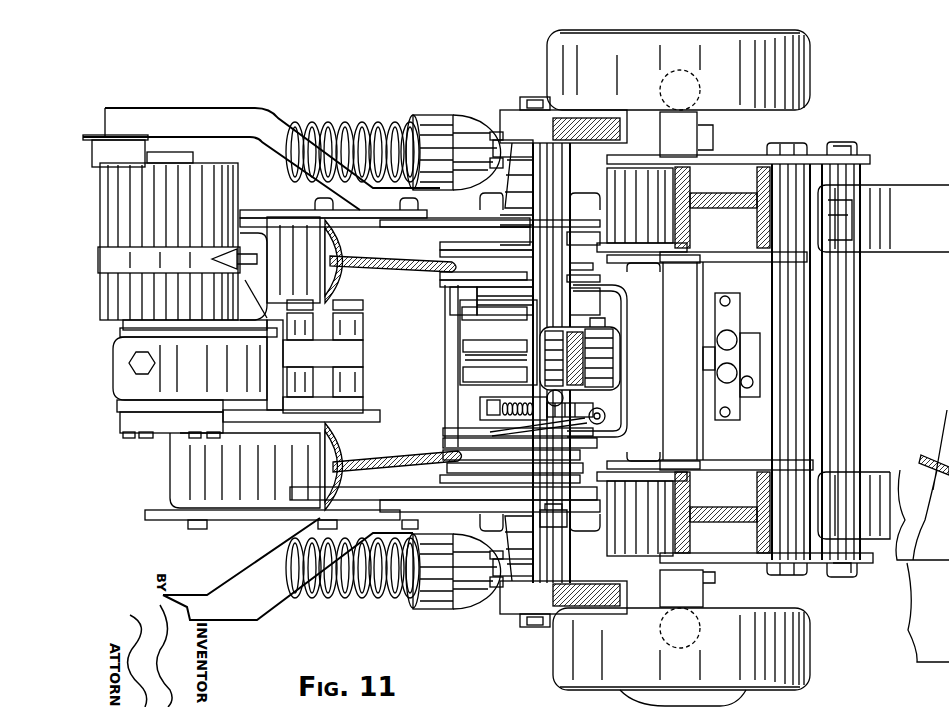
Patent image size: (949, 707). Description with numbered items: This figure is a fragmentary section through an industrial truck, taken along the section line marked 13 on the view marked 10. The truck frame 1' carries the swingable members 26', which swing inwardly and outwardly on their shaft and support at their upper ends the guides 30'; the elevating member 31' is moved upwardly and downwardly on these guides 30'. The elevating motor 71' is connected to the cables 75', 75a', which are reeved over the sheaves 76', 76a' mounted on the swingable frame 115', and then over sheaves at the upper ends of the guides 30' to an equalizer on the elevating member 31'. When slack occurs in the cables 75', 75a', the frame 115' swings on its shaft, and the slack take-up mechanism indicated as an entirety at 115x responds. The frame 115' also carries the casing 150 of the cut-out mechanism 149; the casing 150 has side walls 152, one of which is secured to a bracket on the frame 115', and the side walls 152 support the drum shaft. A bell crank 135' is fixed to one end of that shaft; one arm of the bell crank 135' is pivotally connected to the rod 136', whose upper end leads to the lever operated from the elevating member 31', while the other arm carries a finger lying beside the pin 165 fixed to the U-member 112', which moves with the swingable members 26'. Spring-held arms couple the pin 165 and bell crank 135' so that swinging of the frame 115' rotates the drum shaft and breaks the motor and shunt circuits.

The truck frame 1' is at (261, 364).
The elevating motor 71' is at (177, 236).
The cable 75' is at (393, 255).
The cable 75a' is at (397, 444).
The sheave 76' is at (467, 274).
The sheave 76a' is at (512, 484).
The side wall 152 is at (462, 306).
The casing 150 is at (460, 323).
The cut-out mechanism 149 is at (513, 338).
The U-member 112' is at (468, 365).
The slack take-up mechanism 115x is at (660, 350).
The swingable frame 115' is at (499, 428).
The bell crank 135' is at (614, 362).
The rod 136' is at (604, 407).
The pin 165 is at (543, 422).
The swingable member 26' is at (563, 362).
The guide 30' is at (683, 361).
The elevating member 31' is at (883, 362).
The section line 13- 13 is at (460, 480).
The section line 10- 10 is at (150, 511).